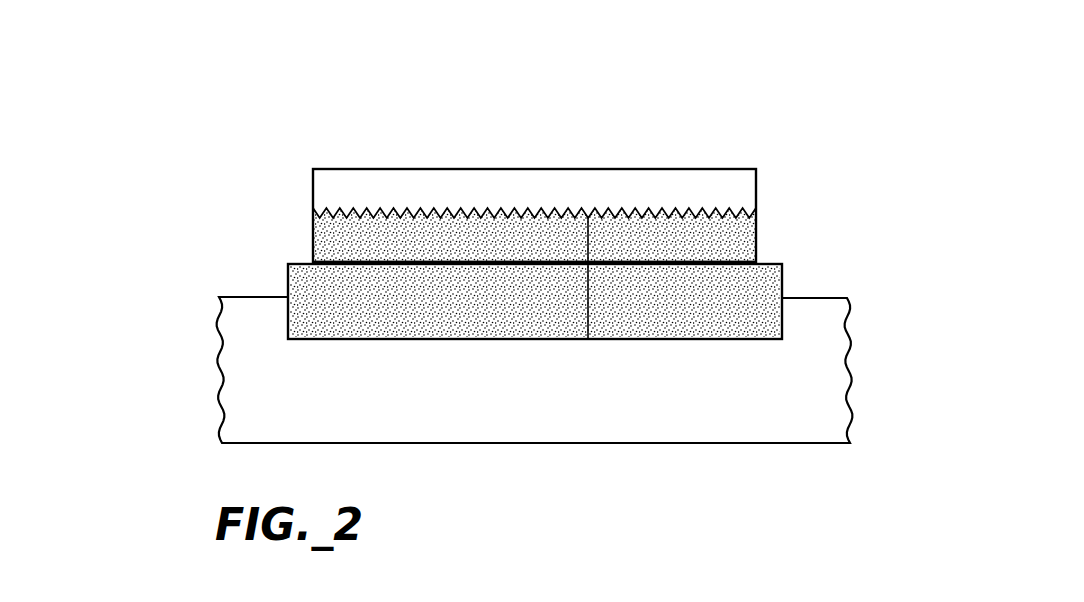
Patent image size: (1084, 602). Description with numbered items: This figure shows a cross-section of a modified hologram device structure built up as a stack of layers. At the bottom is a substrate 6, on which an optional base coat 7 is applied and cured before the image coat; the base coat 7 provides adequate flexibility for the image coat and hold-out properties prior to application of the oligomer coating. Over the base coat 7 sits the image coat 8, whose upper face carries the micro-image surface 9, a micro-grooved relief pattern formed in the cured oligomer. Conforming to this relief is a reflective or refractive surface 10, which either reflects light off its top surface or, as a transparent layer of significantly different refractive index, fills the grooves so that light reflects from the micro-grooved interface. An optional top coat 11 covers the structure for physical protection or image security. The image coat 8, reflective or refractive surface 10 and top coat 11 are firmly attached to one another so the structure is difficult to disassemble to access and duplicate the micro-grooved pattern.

The substrate 6 is at (303, 443).
The base coat 7 is at (535, 339).
The image coat 8 is at (526, 296).
The micro-image surface 9 is at (588, 340).
The reflective or refractive surface 10 is at (534, 208).
The top coat 11 is at (623, 169).